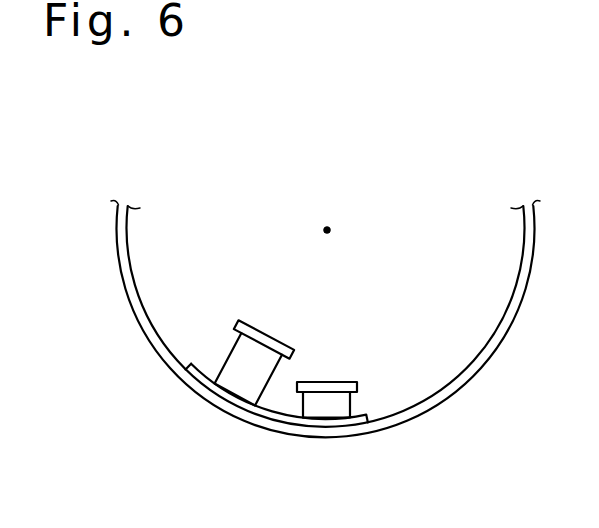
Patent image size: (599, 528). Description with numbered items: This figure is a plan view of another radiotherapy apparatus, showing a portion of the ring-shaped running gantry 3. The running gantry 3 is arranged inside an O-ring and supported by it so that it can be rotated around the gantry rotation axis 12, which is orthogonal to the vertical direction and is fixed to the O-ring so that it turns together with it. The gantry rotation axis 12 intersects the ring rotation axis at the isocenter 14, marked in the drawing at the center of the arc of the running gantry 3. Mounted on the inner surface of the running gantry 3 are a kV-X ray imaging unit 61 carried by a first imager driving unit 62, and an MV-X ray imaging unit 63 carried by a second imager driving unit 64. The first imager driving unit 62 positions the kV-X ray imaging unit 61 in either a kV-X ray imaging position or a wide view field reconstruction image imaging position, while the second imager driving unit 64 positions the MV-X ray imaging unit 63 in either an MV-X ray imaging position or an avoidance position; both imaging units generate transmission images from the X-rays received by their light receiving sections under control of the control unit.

The running gantry 3 is at (428, 414).
The gantry rotation axis 12 is at (329, 227).
The isocenter 14 is at (327, 230).
The kV-X ray imaging unit 61 is at (266, 343).
The first imager driving unit 62 is at (230, 362).
The MV-X ray imaging unit 63 is at (333, 383).
The second imager driving unit 64 is at (350, 406).